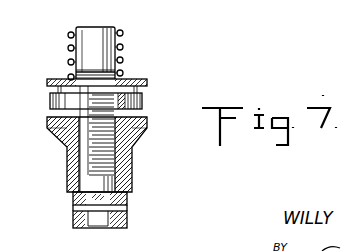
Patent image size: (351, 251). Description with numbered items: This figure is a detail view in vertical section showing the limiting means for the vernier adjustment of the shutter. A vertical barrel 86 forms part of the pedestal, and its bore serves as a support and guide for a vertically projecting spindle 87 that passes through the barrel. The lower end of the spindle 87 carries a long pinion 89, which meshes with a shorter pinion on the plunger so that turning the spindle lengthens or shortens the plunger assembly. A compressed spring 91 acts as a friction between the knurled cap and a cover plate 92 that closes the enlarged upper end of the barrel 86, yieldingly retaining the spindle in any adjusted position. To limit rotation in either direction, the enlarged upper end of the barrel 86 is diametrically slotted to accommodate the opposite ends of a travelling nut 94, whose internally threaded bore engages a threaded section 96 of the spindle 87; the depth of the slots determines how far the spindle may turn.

The vertical barrel 86 is at (133, 152).
The spindle 87 is at (112, 27).
The long pinion 89 is at (73, 222).
The compressed spring 91 is at (123, 47).
The cover plate 92 is at (144, 78).
The travelling nut 94 is at (143, 98).
The threaded section 96 is at (133, 135).